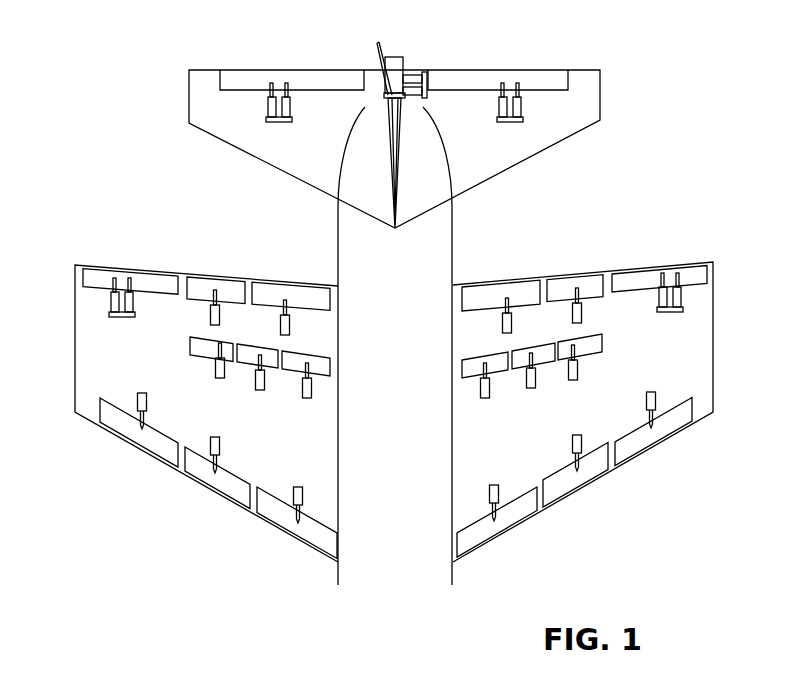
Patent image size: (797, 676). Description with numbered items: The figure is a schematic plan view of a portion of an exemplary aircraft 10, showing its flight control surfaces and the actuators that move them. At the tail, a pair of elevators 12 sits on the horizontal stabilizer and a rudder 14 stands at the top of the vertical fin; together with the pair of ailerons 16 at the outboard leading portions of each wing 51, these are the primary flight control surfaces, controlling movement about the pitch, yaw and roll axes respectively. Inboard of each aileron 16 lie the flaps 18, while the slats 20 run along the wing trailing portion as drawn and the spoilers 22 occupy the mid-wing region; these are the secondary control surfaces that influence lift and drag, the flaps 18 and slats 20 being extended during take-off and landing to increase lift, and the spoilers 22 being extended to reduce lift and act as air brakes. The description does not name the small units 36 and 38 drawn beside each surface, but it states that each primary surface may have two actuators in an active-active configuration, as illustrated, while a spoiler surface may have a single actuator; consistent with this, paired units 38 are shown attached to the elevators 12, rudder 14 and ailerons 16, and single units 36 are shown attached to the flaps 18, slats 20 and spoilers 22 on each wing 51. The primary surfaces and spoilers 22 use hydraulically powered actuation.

The aircraft 10 is at (116, 178).
The elevators 12 is at (252, 72).
The rudder 14 is at (388, 52).
The ailerons 16 is at (158, 270).
The flaps 18 is at (205, 282).
The slats 20 is at (153, 452).
The spoilers 22 is at (204, 357).
The single sensor 36 is at (678, 383).
The dual sensor 38 is at (282, 122).
The wing 51 is at (100, 350).